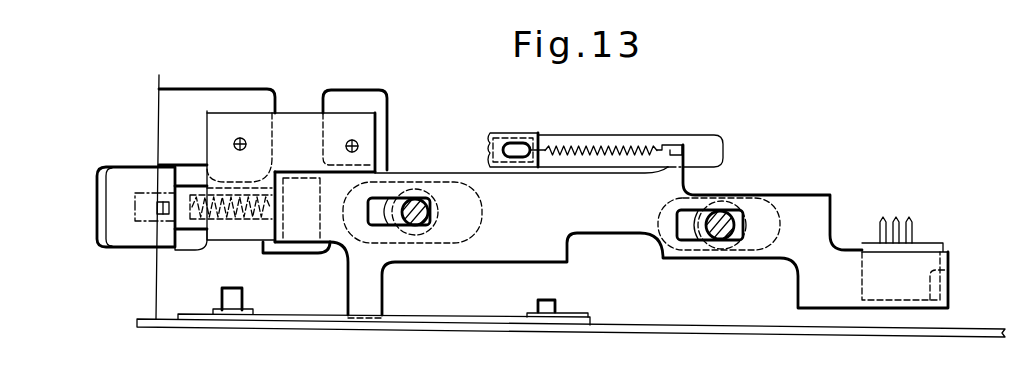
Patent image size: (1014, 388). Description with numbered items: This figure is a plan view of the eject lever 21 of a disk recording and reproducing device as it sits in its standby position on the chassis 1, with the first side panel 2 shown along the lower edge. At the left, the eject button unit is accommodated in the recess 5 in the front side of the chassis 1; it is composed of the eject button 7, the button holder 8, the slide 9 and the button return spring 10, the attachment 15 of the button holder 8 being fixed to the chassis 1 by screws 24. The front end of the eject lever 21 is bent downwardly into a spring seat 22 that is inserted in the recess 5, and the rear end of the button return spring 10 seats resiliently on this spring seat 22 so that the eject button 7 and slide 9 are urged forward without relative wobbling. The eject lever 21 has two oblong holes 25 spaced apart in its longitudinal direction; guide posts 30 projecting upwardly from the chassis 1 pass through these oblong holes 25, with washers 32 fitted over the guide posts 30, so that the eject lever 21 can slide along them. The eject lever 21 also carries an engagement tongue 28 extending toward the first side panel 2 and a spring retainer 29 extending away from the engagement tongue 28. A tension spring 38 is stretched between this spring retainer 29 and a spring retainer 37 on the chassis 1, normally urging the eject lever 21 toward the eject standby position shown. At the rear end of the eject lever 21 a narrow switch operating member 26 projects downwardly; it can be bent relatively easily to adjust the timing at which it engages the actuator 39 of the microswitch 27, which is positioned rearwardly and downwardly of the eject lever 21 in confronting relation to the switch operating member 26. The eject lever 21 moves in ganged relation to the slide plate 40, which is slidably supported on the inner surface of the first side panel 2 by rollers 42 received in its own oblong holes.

The chassis 1 is at (158, 103).
The first side panel 2 is at (797, 330).
The recess 5 is at (188, 248).
The eject button 7 is at (118, 240).
The button holder 8 is at (285, 112).
The slide 9 is at (227, 236).
The button return spring 10 is at (243, 222).
The attachment 15 is at (312, 113).
The eject lever 21 is at (538, 250).
The spring seat 22 is at (292, 244).
The screws 24 is at (241, 140).
The oblong holes 25 is at (370, 224).
The switch operating member 26 is at (938, 280).
The microswitch 27 is at (900, 302).
The engagement tongue 28 is at (373, 295).
The spring retainer 29 is at (681, 149).
The guide posts 30 is at (410, 196).
The washers 32 is at (441, 237).
The spring retainer 37 is at (533, 139).
The tension spring 38 is at (608, 146).
The actuator 39 is at (932, 302).
The slide plate 40 is at (459, 320).
The rollers 42 is at (225, 312).